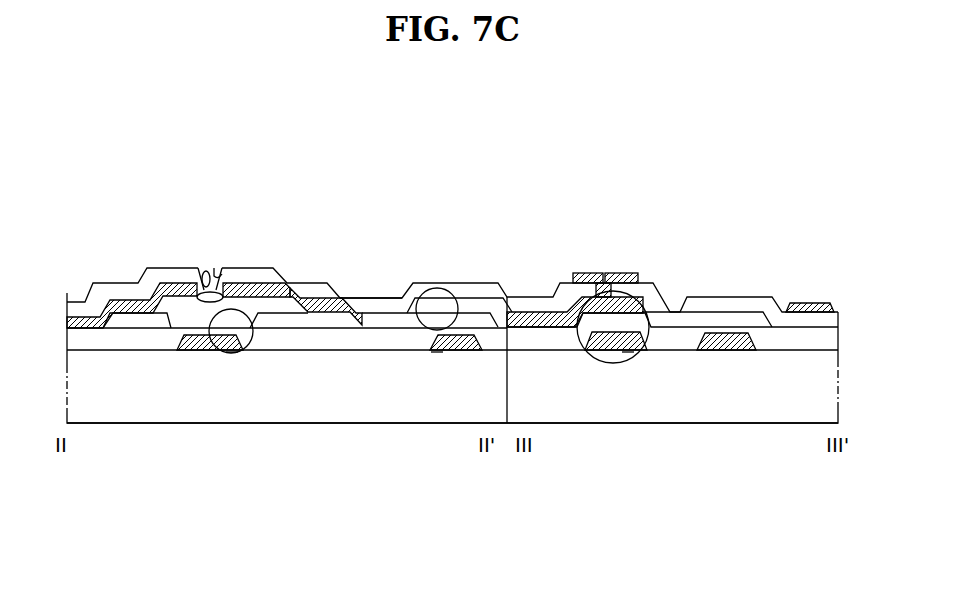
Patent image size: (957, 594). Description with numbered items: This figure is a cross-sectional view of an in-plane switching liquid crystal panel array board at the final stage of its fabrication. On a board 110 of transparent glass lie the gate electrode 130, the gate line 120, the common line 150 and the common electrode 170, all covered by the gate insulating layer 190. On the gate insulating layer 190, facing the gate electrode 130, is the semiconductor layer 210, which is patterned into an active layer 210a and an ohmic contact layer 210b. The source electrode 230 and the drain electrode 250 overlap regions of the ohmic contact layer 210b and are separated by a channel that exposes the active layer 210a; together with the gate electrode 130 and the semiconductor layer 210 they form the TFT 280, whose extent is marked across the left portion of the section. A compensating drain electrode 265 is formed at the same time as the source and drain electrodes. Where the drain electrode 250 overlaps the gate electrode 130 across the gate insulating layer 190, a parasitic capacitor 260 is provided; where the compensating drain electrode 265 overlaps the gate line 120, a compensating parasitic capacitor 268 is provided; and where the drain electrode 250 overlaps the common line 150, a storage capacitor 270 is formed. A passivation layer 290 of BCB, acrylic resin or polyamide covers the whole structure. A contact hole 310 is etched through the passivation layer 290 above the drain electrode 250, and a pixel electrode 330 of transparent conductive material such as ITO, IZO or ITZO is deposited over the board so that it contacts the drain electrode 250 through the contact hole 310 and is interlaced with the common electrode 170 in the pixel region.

The board 110 is at (838, 382).
The gate line 120 is at (460, 350).
The gate electrode 130 is at (202, 350).
The common line 150 is at (609, 350).
The common electrode 170 is at (725, 350).
The gate insulating layer 190 is at (838, 343).
The semiconductor layer 210 is at (314, 238).
The active layer 210a is at (294, 320).
The ohmic contact layer 210b is at (255, 267).
The source electrode 230 is at (71, 315).
The drain electrode 250 is at (344, 298).
The parasitic capacitor C'gd 260 is at (233, 362).
The compensating drain electrode 265 is at (383, 309).
The compensating parasitic capacitor C"gd 268 is at (437, 362).
The storage capacitor Cst 270 is at (629, 364).
The TFT 280 is at (347, 466).
The passivation layer 290 is at (838, 318).
The contact hole 310 is at (608, 270).
The pixel electrode 330 is at (803, 303).